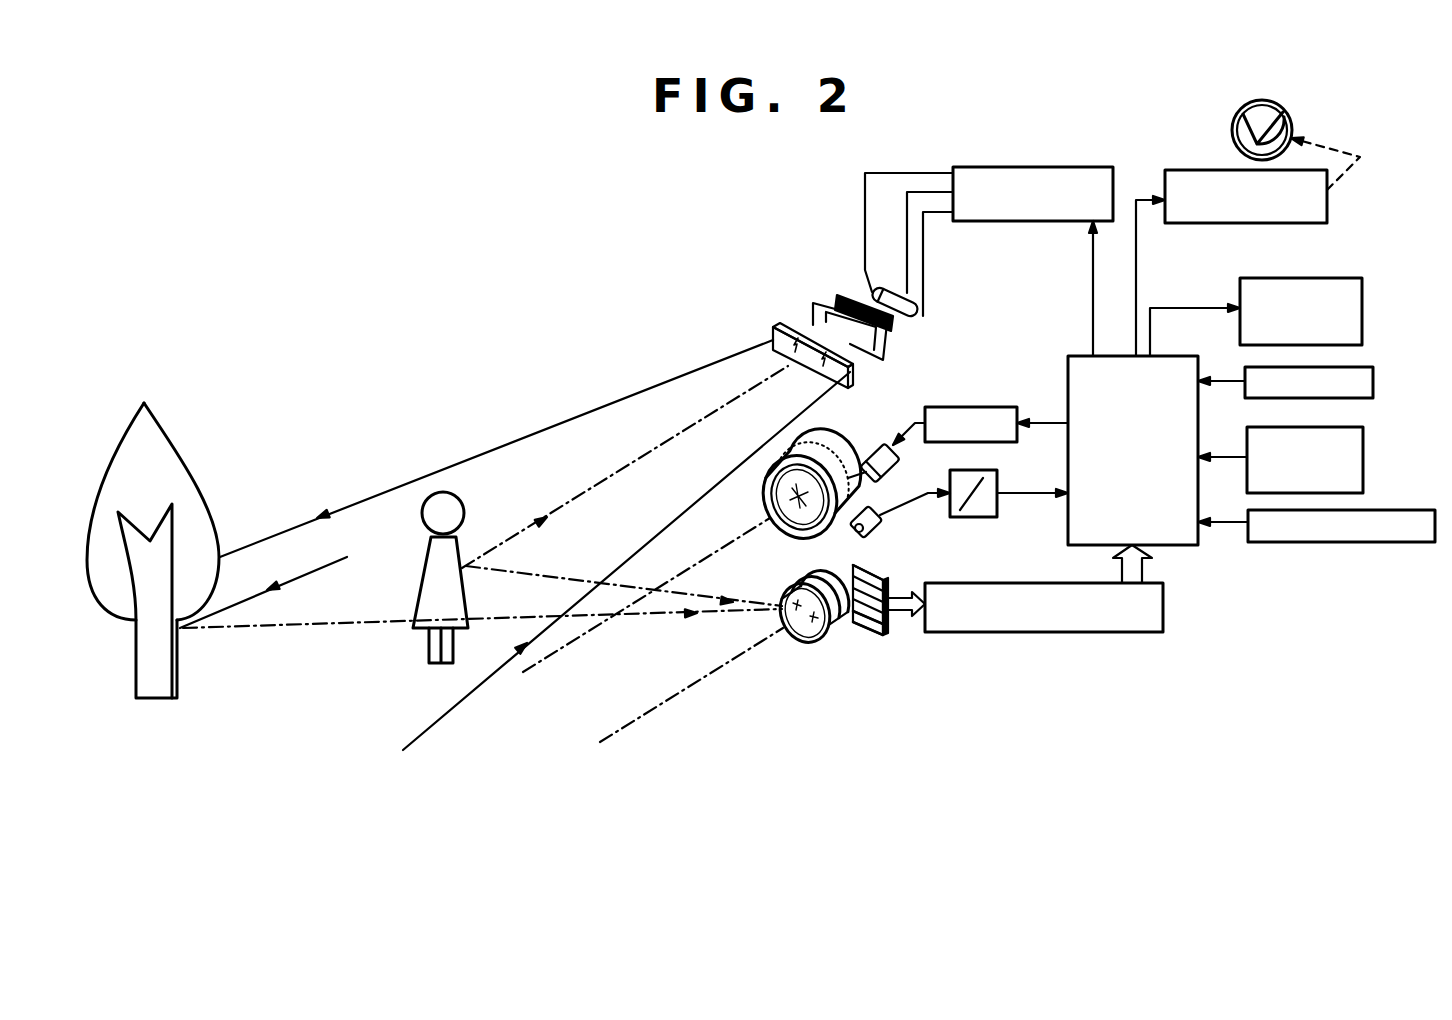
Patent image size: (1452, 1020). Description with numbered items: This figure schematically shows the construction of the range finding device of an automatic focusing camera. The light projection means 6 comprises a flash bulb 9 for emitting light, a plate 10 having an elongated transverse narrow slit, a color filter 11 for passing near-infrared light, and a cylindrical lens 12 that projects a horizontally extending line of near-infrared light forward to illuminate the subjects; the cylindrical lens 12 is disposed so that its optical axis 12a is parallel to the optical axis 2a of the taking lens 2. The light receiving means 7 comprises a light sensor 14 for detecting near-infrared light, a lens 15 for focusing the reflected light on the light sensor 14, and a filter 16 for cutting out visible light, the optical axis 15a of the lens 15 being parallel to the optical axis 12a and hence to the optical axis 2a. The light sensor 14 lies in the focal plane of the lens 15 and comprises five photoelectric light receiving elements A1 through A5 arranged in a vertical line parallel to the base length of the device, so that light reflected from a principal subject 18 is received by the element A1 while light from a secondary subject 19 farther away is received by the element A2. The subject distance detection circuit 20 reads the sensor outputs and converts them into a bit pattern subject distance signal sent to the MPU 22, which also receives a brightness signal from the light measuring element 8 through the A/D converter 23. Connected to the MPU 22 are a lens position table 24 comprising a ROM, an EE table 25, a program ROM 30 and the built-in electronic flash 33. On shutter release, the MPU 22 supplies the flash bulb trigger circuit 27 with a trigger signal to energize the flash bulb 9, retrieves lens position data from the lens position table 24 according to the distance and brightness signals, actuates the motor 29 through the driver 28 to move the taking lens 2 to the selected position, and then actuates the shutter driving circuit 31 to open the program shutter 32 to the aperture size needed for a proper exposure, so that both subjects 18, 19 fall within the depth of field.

The taking lens 2 is at (773, 492).
The optical axis of the taking lens 2a is at (560, 648).
The light projecting means 6 is at (847, 218).
The light receiving means 7 is at (857, 716).
The light measuring element 8 is at (885, 530).
The flash bulb 9 is at (870, 297).
The plate 10 is at (838, 298).
The color filter 11 is at (813, 305).
The cylindrical lens 12 is at (773, 327).
The optical axis of the cylindrical lens 12a is at (613, 478).
The light sensor 14 is at (860, 637).
The lens 15 is at (840, 630).
The optical axis of the lens 15a is at (688, 688).
The filter 16 is at (797, 636).
The principal subject 18 is at (427, 587).
The secondary subject 19 is at (190, 487).
The subject distance detection circuit 20 is at (1053, 632).
The microprocessor unit 22 is at (1075, 356).
The A/D converter 23 is at (975, 517).
The lens position table 24 is at (1363, 462).
The EE table 25 is at (1373, 385).
The flash bulb trigger circuit 27 is at (1037, 167).
The driver 28 is at (970, 407).
The motor 29 is at (882, 447).
The program ROM 30 is at (1335, 542).
The shutter driving circuit 31 is at (1327, 205).
The programmable shutter 32 is at (1233, 130).
The built-in electronic flash 33 is at (1362, 312).
The photoelectric light receiving element A1 is at (875, 637).
The photoelectric light receiving element A2 is at (885, 620).
The photoelectric light receiving element A5 is at (880, 582).